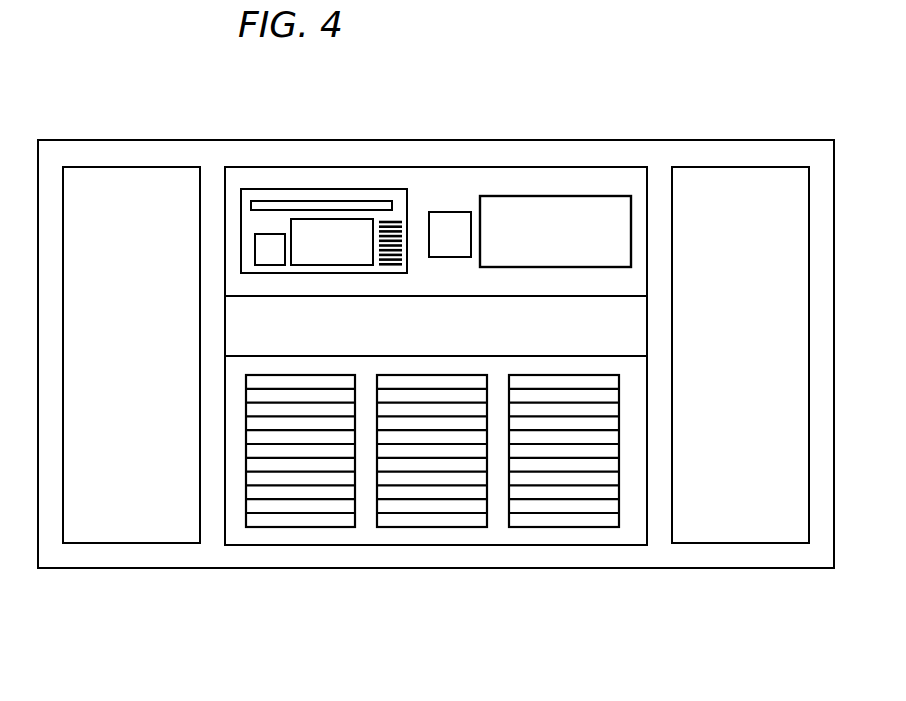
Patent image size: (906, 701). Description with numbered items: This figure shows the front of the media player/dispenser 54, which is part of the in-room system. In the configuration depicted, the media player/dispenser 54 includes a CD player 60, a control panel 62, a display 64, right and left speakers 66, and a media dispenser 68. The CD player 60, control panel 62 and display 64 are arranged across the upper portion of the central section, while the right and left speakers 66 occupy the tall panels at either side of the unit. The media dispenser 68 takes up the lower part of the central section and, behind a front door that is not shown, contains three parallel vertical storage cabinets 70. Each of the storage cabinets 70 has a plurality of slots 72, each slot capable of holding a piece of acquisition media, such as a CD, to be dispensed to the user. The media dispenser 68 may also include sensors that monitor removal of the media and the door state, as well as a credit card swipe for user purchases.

The media player/dispenser 54 is at (675, 90).
The CD player 60 is at (313, 204).
The control panel 62 is at (446, 212).
The display 64 is at (535, 196).
The right and left speakers 66 is at (133, 190).
The media dispenser 68 is at (388, 542).
The storage cabinets 70 is at (300, 527).
The slots 72 is at (489, 492).